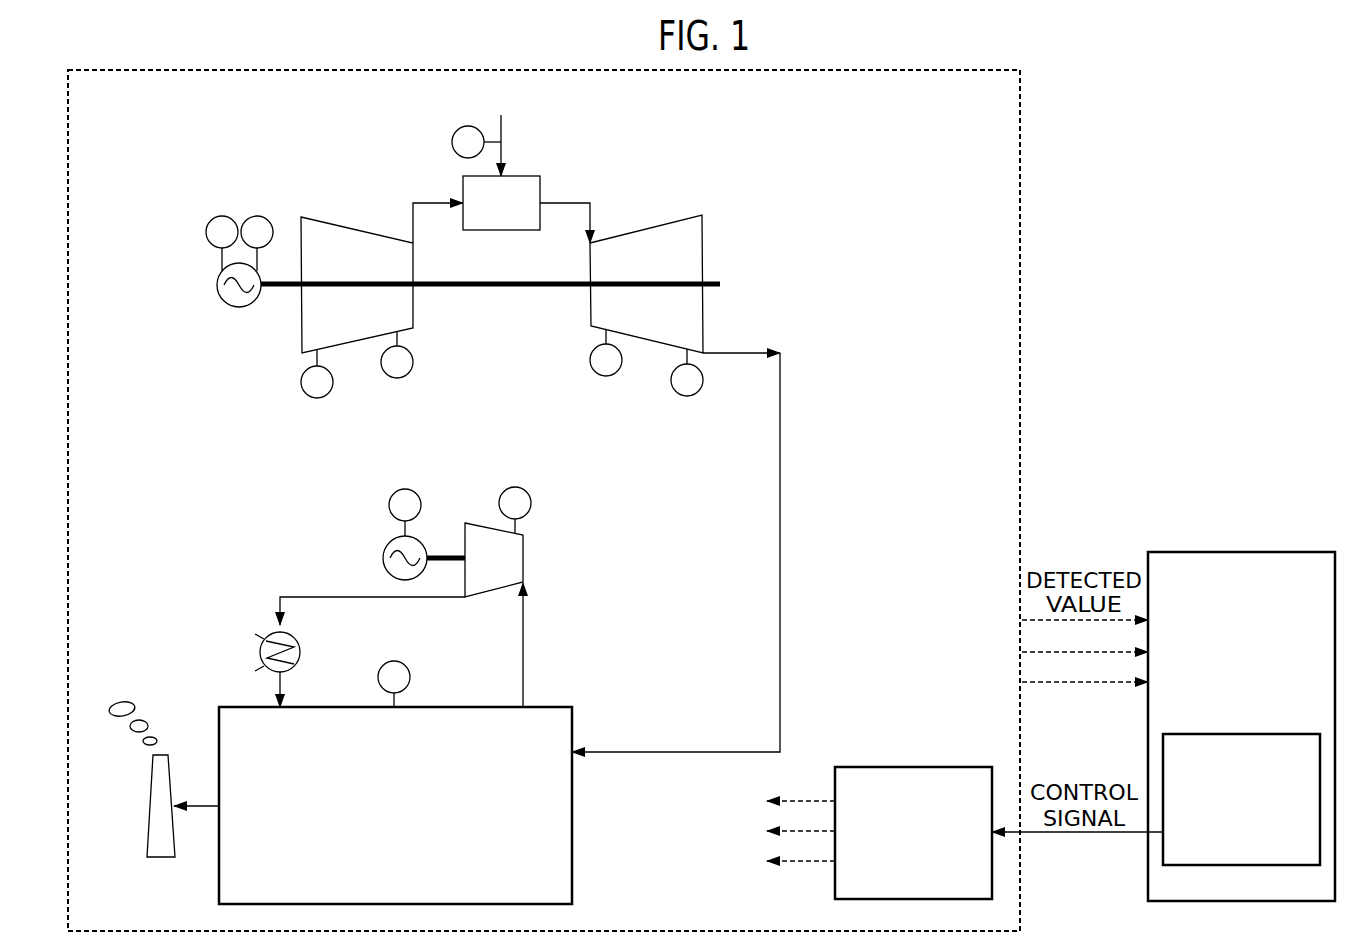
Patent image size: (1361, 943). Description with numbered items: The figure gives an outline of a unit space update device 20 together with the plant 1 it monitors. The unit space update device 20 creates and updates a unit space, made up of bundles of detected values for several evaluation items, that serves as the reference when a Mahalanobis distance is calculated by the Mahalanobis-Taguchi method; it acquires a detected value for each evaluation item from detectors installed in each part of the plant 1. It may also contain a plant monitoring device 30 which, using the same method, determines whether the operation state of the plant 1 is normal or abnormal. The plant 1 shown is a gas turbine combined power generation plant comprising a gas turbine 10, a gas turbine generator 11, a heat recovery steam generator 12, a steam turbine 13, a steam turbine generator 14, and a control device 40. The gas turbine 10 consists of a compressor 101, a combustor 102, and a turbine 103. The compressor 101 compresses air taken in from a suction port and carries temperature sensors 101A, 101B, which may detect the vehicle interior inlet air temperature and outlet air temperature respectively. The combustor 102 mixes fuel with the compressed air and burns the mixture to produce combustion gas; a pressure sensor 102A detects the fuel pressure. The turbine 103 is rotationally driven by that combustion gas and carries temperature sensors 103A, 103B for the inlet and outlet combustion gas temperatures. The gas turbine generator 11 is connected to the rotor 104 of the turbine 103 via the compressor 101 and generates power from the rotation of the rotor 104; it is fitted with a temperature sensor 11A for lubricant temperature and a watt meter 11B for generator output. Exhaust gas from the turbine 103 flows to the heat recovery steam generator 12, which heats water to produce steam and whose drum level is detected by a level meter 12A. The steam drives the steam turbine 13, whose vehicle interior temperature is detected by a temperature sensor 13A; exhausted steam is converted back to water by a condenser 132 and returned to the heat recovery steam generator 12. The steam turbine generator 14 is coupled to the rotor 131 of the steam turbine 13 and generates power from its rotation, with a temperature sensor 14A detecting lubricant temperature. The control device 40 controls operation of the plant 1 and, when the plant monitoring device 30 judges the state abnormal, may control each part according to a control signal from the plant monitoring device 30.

The plant 1 is at (1020, 143).
The gas turbine 10 is at (602, 152).
The compressor 101 is at (360, 230).
The temperature sensor 101A is at (317, 398).
The temperature sensor 101B is at (411, 370).
The combustor 102 is at (527, 176).
The pressure sensor 102A is at (452, 142).
The turbine 103 is at (643, 230).
The temperature sensor 103A is at (606, 376).
The temperature sensor 103B is at (687, 396).
The rotor 104 is at (500, 290).
The gas turbine generator 11 is at (217, 287).
The temperature sensor 11A is at (255, 216).
The watt meter 11B is at (213, 220).
The heat recovery steam generator 12 is at (573, 832).
The level meter 12A is at (394, 661).
The steam turbine 13 is at (523, 558).
The temperature sensor 13A is at (515, 487).
The rotor 131 is at (442, 553).
The condenser 132 is at (300, 651).
The steam turbine generator 14 is at (383, 558).
The temperature sensor 14A is at (405, 489).
The unit space update device 20 is at (1240, 552).
The plant monitoring device 30 is at (1241, 734).
The control device 40 is at (914, 767).